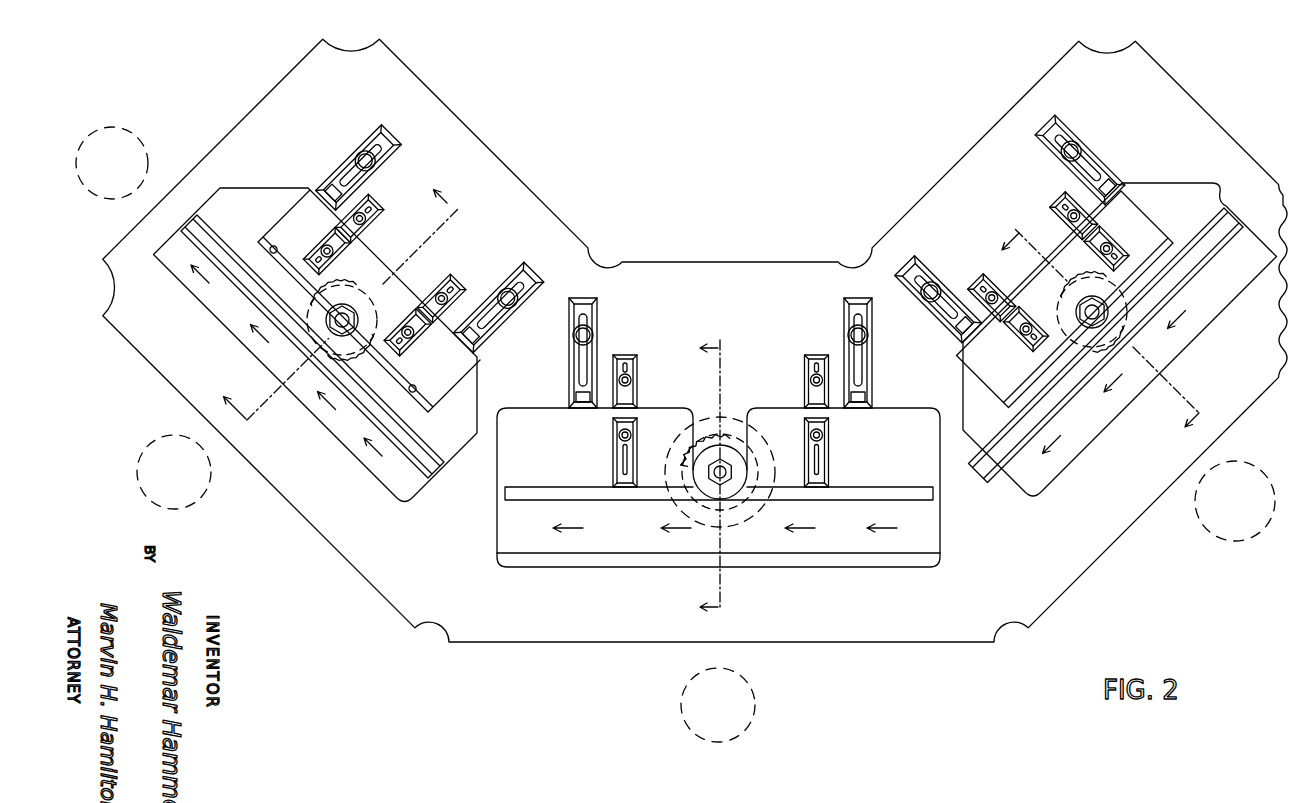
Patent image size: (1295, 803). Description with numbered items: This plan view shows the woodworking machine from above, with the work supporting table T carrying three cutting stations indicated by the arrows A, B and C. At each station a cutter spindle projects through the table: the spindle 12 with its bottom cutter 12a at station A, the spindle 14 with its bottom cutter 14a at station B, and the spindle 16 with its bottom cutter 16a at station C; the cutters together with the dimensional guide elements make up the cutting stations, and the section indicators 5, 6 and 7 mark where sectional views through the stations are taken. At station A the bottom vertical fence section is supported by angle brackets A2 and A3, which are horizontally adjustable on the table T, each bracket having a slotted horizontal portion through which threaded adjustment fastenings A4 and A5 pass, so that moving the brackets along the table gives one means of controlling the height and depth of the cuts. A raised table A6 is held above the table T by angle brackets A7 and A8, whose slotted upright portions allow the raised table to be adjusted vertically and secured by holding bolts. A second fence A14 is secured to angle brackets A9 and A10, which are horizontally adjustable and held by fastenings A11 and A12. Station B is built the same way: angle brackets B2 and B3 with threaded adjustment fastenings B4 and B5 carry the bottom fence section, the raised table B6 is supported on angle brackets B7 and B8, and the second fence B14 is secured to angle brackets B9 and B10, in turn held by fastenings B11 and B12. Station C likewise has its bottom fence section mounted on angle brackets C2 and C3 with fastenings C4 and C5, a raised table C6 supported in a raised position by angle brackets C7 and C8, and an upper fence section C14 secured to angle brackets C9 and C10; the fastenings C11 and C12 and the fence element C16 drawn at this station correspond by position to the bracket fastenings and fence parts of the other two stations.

The work supporting table T is at (1088, 572).
The cutting station A is at (359, 315).
The cutting station B is at (718, 436).
The cutting station C is at (1089, 303).
The section line 5- 5 is at (540, 395).
The section line 6- 6 is at (268, 369).
The section line 7- 7 is at (1094, 338).
The spindle 12 is at (355, 308).
The bottom cutter 12a is at (372, 300).
The spindle 14 is at (708, 462).
The bottom cutter 14a is at (716, 433).
The spindle 16 is at (1080, 306).
The bottom cutter 16a is at (1068, 288).
The angle bracket A2 is at (374, 210).
The angle bracket A3 is at (454, 287).
The threaded adjustment fastening A4 is at (371, 225).
The threaded adjustment fastening A5 is at (444, 293).
The raised table A6 is at (357, 455).
The angle bracket A7 is at (390, 145).
The angle bracket A8 is at (527, 265).
The angle bracket A9 is at (354, 254).
The angle bracket A10 is at (422, 336).
The fastening A11 is at (352, 252).
The fastening A12 is at (404, 328).
The second fence A14 is at (452, 425).
The angle bracket B2 is at (643, 363).
The angle bracket B3 is at (797, 363).
The threaded adjustment fastening B4 is at (632, 377).
The threaded adjustment fastening B5 is at (808, 378).
The raised table B6 is at (618, 556).
The angle bracket B7 is at (597, 305).
The angle bracket B8 is at (847, 297).
The angle bracket B9 is at (598, 452).
The angle bracket B10 is at (847, 452).
The fastening B11 is at (614, 432).
The fastening B12 is at (828, 434).
The second fence B14 is at (538, 490).
The angle bracket C2 is at (986, 284).
The angle bracket C3 is at (1067, 211).
The threaded adjustment fastening C4 is at (998, 303).
The threaded adjustment fastening C5 is at (1068, 226).
The raised table C6 is at (1087, 440).
The angle bracket C7 is at (911, 263).
The angle bracket C8 is at (1070, 127).
The angle bracket C9 is at (1011, 346).
The angle bracket C10 is at (1129, 241).
The clamp screw C11 is at (1018, 338).
The clamp screw C12 is at (1112, 241).
The upper fence section C14 is at (1007, 418).
The slide block C16 is at (1013, 440).